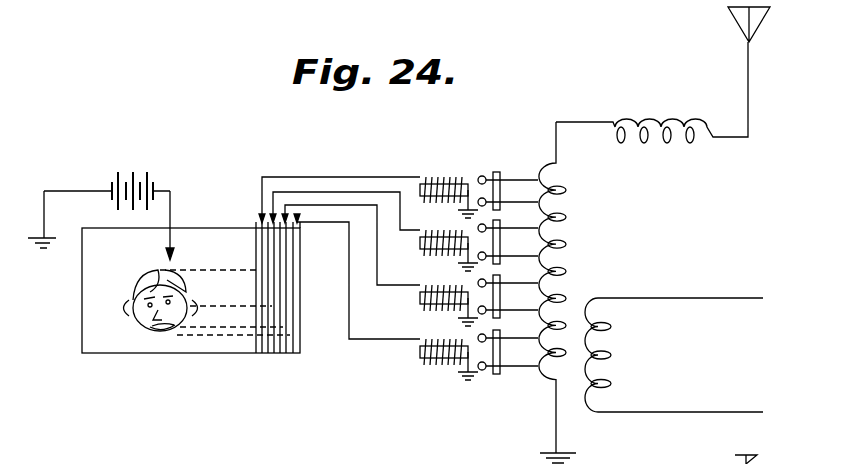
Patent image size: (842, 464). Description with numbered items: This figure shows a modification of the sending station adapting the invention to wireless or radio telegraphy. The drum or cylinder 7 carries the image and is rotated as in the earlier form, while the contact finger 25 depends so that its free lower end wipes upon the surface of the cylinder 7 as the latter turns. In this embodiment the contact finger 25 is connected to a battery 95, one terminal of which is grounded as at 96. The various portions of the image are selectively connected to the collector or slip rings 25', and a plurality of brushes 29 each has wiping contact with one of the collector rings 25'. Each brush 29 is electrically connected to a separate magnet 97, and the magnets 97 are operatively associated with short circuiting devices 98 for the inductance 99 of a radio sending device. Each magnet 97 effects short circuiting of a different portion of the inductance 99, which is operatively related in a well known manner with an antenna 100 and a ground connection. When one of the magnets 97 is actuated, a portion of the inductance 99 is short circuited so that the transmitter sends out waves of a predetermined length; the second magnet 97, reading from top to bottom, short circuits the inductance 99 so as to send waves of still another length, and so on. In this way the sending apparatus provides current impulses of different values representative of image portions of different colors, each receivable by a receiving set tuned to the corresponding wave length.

The battery 95 is at (146, 180).
The ground 96 is at (42, 249).
The contact finger 25 is at (189, 225).
The cylinder 7 is at (191, 290).
The collector rings 25' is at (278, 304).
The brushes 29 is at (262, 206).
The magnets 97 is at (440, 178).
The short circuiting devices 98 is at (496, 176).
The inductance 99 is at (562, 214).
The antenna 100 is at (733, 20).